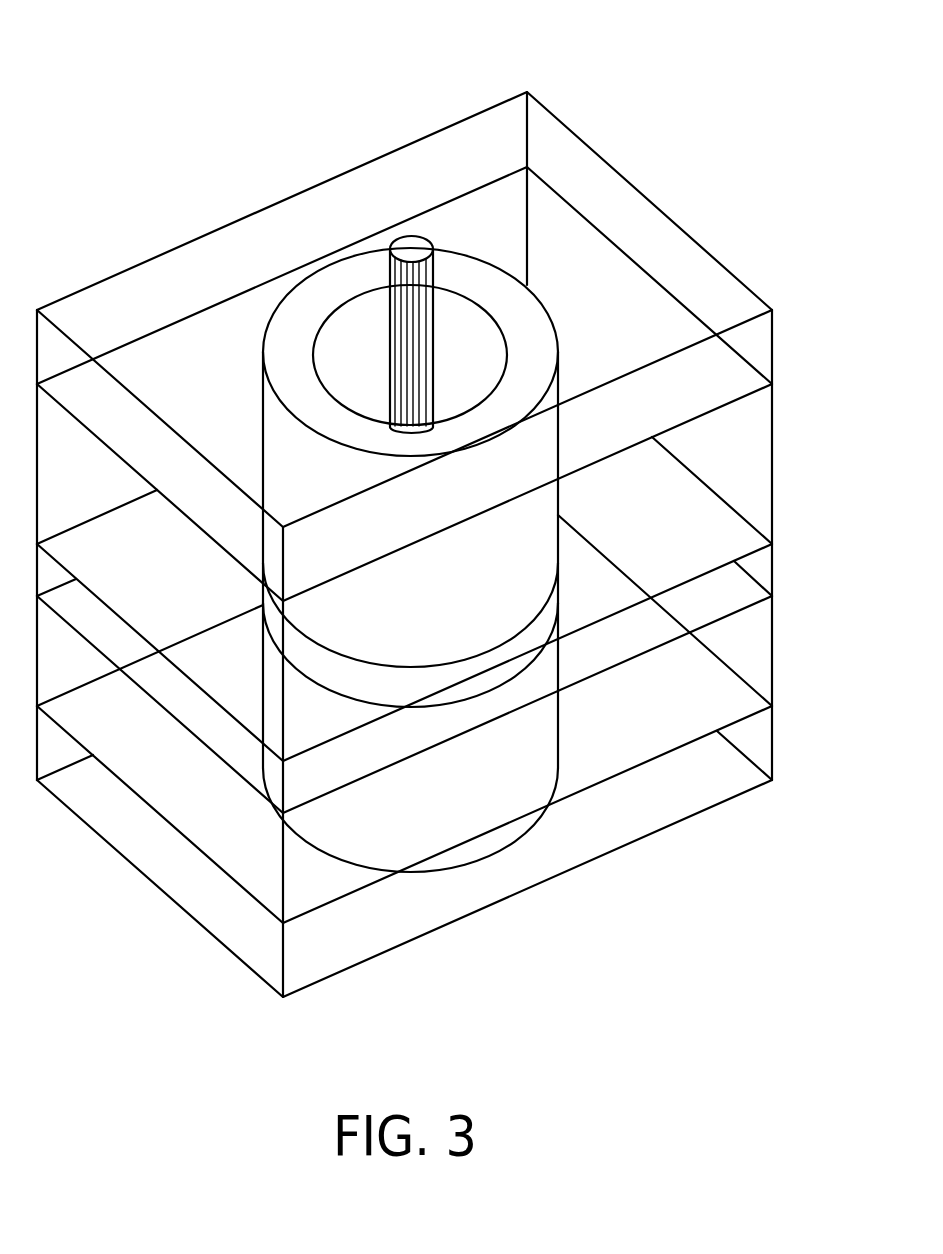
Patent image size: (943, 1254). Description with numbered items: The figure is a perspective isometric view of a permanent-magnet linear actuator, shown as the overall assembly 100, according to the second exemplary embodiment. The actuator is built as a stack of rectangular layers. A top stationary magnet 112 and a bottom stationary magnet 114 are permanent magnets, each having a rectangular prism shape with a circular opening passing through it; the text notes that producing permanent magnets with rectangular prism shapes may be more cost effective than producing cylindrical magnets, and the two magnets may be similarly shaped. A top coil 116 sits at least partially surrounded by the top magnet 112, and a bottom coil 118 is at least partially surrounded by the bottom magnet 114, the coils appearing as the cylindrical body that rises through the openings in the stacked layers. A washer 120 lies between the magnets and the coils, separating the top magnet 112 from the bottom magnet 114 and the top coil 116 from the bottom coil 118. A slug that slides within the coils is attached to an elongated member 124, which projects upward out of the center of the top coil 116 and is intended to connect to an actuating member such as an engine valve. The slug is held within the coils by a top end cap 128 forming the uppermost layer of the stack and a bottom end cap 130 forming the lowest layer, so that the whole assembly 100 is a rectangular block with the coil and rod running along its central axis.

The device assembly 100 is at (404, 504).
The top stationary magnet 112 is at (772, 438).
The bottom stationary magnet 114 is at (772, 668).
The top coil 116 is at (549, 307).
The bottom coil 118 is at (475, 867).
The washer 120 is at (772, 563).
The elongated member 124 is at (412, 245).
The top end cap 128 is at (717, 260).
The bottom end cap 130 is at (665, 827).